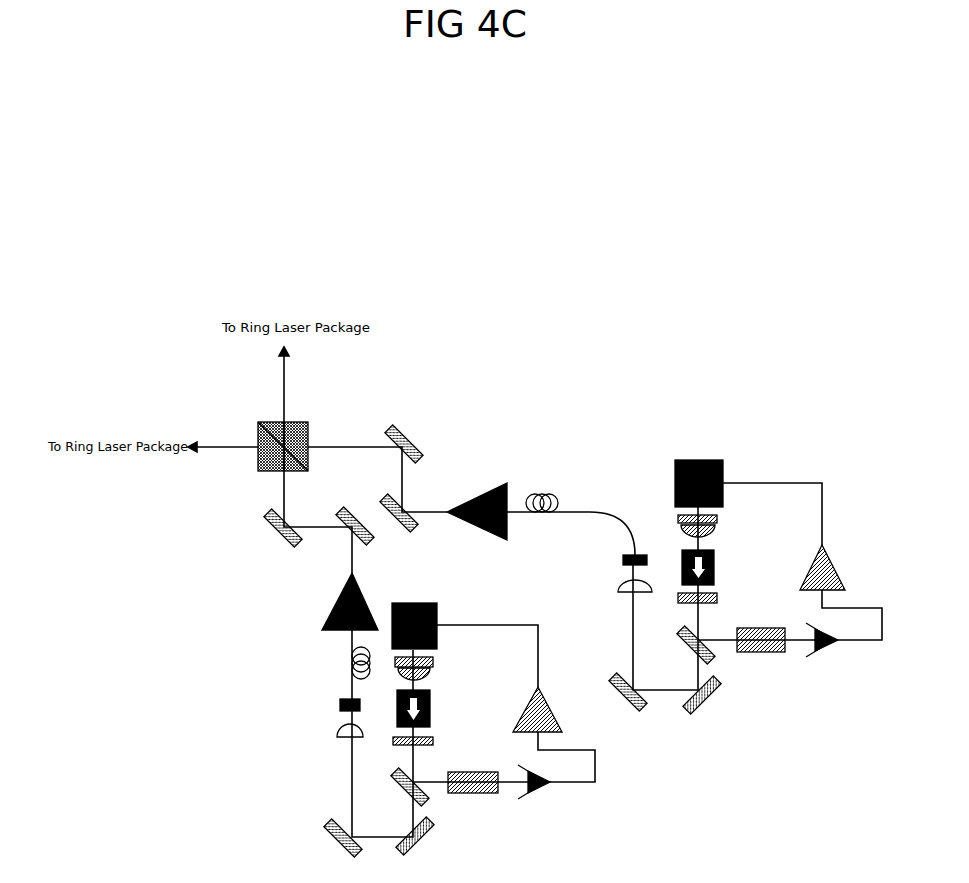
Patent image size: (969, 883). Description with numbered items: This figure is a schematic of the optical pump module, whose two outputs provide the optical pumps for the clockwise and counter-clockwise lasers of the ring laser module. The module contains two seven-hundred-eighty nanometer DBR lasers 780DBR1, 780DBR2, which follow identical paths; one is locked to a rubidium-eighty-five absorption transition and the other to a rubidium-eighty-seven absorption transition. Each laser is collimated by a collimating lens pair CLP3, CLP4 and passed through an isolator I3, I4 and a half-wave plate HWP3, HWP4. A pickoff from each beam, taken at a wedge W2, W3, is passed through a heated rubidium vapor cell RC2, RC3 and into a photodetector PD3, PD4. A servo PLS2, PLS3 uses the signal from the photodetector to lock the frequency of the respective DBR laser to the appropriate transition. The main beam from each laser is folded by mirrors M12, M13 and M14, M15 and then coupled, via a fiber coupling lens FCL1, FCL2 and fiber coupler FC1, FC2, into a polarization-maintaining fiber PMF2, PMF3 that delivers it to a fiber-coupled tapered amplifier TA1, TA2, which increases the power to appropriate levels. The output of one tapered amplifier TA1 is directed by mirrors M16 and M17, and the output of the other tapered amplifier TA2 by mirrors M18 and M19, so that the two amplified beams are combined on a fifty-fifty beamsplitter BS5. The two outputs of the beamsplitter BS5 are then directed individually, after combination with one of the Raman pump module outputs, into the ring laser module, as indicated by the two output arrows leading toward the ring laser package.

The 50/50 beamsplitter BS5 is at (286, 438).
The mirror M12 is at (415, 846).
The mirror M13 is at (343, 847).
The mirror M14 is at (702, 705).
The mirror M15 is at (628, 704).
The mirror M16 is at (365, 533).
The mirror M17 is at (278, 534).
The mirror M18 is at (406, 523).
The mirror M19 is at (409, 439).
The fiber-coupled tapered amplifier TA1 is at (341, 601).
The fiber-coupled tapered amplifier TA2 is at (477, 515).
The polarization maintaining fiber PMF2 is at (339, 663).
The polarization maintaining fiber PMF3 is at (543, 516).
The fiber coupler FC1 is at (332, 707).
The fiber coupler FC2 is at (618, 562).
The fiber coupling lens FCL1 is at (331, 732).
The fiber coupling lens FCL2 is at (617, 587).
The 780 nm DBR laser 780DBR1 is at (417, 617).
The 780 nm DBR laser 780DBR2 is at (699, 473).
The collimating lens pair CLP3 is at (432, 668).
The collimating lens pair CLP4 is at (716, 526).
The optical isolator I3 is at (424, 708).
The optical isolator I4 is at (710, 567).
The half wave plate HWP3 is at (436, 742).
The half wave plate HWP4 is at (720, 600).
The wedge beam sampler W2 is at (403, 787).
The wedge beam sampler W3 is at (690, 646).
The heated rubidium vapor cell RC2 is at (473, 795).
The heated rubidium vapor cell RC3 is at (761, 653).
The photodetector PD3 is at (534, 791).
The photodetector PD4 is at (822, 650).
The servo PLS2 is at (525, 709).
The servo PLS3 is at (839, 567).